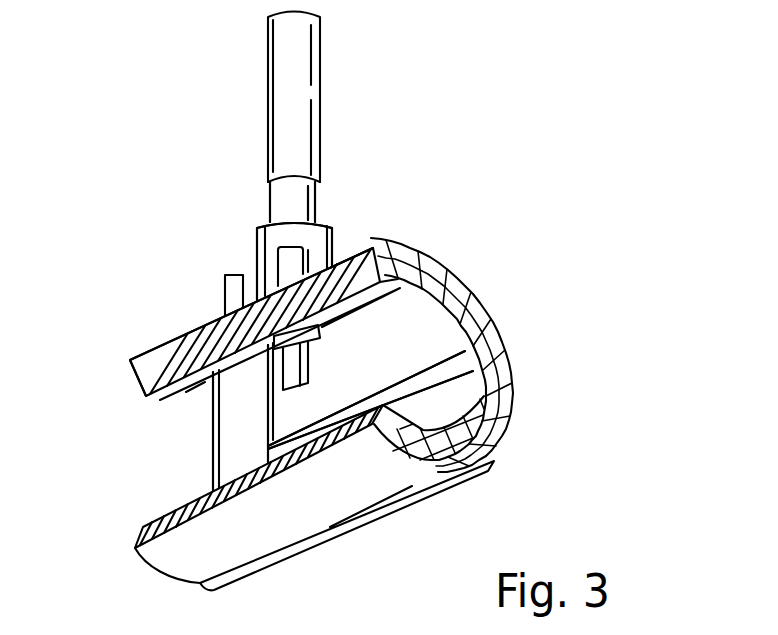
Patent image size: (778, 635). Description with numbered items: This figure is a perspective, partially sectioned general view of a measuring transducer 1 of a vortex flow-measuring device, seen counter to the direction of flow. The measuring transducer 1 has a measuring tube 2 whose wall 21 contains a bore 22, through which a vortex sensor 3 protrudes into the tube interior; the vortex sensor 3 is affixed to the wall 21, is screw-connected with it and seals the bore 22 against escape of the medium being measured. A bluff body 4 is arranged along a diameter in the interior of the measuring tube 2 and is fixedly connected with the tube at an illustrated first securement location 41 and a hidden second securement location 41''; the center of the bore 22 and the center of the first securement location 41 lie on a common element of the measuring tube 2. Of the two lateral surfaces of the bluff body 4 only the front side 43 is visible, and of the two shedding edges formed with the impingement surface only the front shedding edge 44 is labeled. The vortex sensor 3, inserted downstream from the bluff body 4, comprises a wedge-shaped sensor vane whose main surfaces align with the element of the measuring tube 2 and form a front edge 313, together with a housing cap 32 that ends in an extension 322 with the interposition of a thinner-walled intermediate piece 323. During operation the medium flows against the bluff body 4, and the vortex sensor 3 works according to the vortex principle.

The measuring transducer 1 is at (170, 297).
The measuring tube 2 is at (485, 308).
The vortex sensor 3 is at (256, 250).
The bluff body 4 is at (210, 434).
The wall 21 is at (341, 262).
The bore 22 is at (322, 340).
The housing cap 32 is at (238, 300).
The first securement location 41 is at (250, 324).
The second securement location 41'' is at (285, 513).
The front side 43 is at (305, 464).
The front shedding edge 44 is at (214, 468).
The front edge 313 is at (308, 385).
The extension 322 is at (318, 88).
The intermediate piece 323 is at (312, 202).